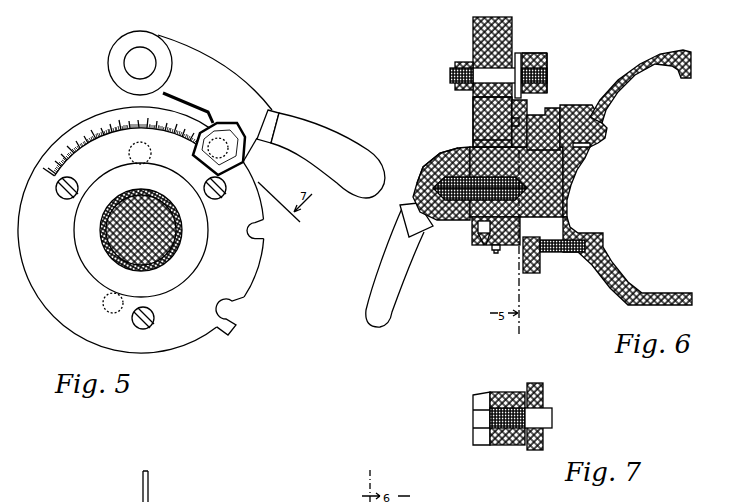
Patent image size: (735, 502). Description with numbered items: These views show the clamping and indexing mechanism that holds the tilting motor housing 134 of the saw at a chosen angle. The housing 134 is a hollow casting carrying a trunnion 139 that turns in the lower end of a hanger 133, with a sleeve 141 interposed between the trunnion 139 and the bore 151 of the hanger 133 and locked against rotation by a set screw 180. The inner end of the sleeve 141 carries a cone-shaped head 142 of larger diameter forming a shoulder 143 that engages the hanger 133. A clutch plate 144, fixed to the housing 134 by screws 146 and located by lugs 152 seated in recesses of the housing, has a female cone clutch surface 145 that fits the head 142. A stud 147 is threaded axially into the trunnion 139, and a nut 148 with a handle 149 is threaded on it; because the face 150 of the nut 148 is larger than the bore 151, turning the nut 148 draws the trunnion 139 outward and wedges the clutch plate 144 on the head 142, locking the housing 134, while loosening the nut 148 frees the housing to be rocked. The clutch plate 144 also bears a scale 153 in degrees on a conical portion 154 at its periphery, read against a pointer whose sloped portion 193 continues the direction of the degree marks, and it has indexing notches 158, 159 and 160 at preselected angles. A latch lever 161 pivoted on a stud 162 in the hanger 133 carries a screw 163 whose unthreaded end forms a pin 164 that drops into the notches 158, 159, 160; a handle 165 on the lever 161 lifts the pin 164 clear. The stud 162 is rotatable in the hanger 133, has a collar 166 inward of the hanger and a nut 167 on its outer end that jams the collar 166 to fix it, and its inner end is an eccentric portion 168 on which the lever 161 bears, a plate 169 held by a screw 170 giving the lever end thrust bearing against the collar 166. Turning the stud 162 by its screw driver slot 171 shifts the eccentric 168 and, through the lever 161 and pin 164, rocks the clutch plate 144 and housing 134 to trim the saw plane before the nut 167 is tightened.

In FIG. 6, the hanger 133 is at (478, 122).
In FIG. 6, the housing 134 is at (620, 68).
In FIG. 5, the trunnion 139 is at (176, 262).
In FIG. 6, the trunnion 139 is at (565, 176).
In FIG. 5, the sleeve 141 is at (179, 245).
In FIG. 6, the sleeve 141 is at (488, 247).
In FIG. 5, the cone-shaped head 142 is at (204, 222).
In FIG. 6, the cone-shaped head 142 is at (515, 241).
In FIG. 6, the shoulder 143 is at (475, 140).
In FIG. 5, the clutch plate 144 is at (240, 284).
In FIG. 6, the clutch plate 144 is at (549, 132).
In FIG. 7, the clutch plate 144 is at (548, 441).
In FIG. 6, the female cone clutch surface 145 is at (541, 121).
In FIG. 5, the screws 146 is at (64, 199).
In FIG. 6, the screws 146 is at (582, 233).
In FIG. 6, the stud 147 is at (440, 162).
In FIG. 6, the nut 148 is at (417, 193).
In FIG. 6, the handle 149 is at (395, 262).
In FIG. 6, the face 150 is at (470, 230).
In FIG. 6, the bore 151 is at (474, 241).
In FIG. 5, the lugs 152 is at (128, 156).
In FIG. 6, the lugs 152 is at (577, 146).
In FIG. 5, the scale 153 is at (52, 160).
In FIG. 6, the conical portion 154 is at (533, 112).
In FIG. 5, the indexing notch 158 is at (226, 318).
In FIG. 5, the indexing notch 159 is at (258, 230).
In FIG. 5, the indexing notch 160 is at (219, 138).
In FIG. 5, the latch lever 161 is at (217, 75).
In FIG. 6, the latch lever 161 is at (527, 53).
In FIG. 6, the stud 162 is at (487, 72).
In FIG. 7, the screw 163 is at (507, 392).
In FIG. 5, the pin 164 is at (226, 138).
In FIG. 7, the pin 164 is at (545, 414).
In FIG. 5, the handle 165 is at (312, 141).
In FIG. 6, the collar 166 is at (519, 58).
In FIG. 6, the nut 167 is at (462, 58).
In FIG. 5, the eccentric portion 168 is at (128, 62).
In FIG. 6, the eccentric portion 168 is at (538, 62).
In FIG. 6, the plate 169 is at (548, 60).
In FIG. 6, the screw 170 is at (548, 76).
In FIG. 6, the screw driver slot 171 is at (455, 73).
In FIG. 6, the set screw 180 is at (497, 251).
In FIG. 6, the sloped portion 193 is at (480, 107).